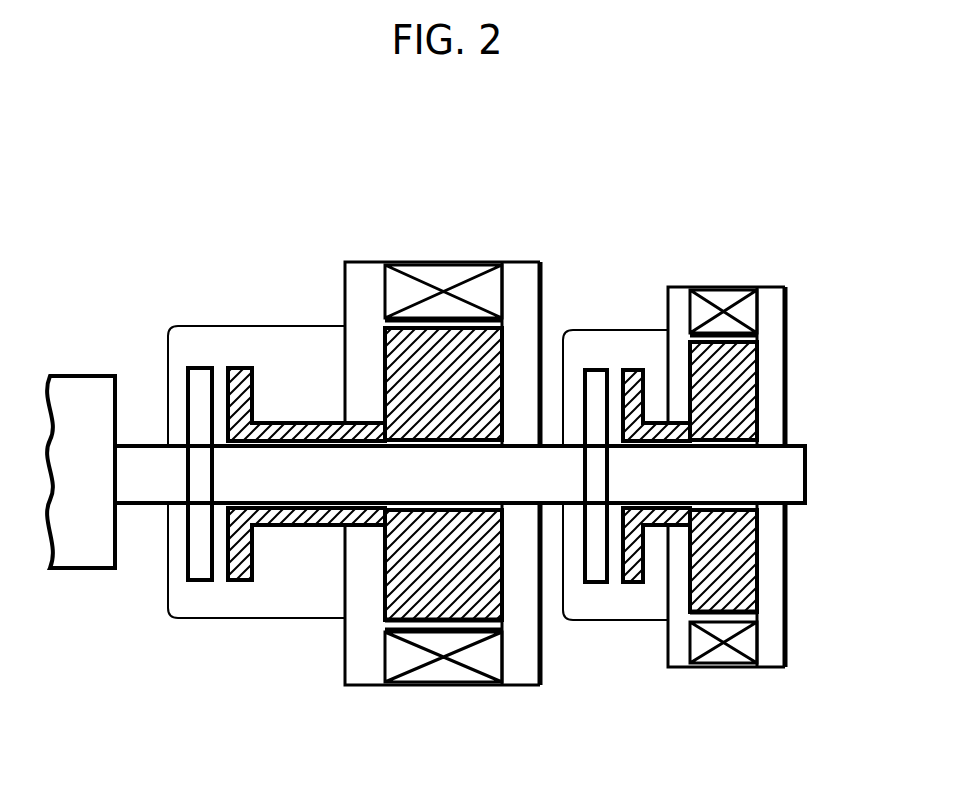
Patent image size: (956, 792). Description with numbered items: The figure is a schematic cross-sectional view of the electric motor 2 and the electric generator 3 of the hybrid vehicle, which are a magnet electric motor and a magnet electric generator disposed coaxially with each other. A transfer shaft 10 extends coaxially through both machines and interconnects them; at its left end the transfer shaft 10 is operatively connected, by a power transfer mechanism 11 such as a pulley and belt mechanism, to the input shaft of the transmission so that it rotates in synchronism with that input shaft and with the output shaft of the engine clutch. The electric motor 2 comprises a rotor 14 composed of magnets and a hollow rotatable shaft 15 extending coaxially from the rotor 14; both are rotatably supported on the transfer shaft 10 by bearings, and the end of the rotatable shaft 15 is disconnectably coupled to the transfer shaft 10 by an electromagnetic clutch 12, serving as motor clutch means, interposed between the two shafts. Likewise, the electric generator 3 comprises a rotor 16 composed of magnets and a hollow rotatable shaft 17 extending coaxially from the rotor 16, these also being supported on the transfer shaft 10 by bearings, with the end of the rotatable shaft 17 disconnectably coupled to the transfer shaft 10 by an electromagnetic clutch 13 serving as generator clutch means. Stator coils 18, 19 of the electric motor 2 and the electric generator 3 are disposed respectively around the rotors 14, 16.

The electric motor 2 is at (376, 430).
The electric generator 3 is at (715, 421).
The transfer shaft 10 is at (152, 482).
The power transfer mechanism 11 is at (82, 370).
The electromagnetic clutch 12 is at (218, 587).
The electromagnetic clutch 13 is at (613, 587).
The rotor 14 is at (478, 353).
The rotatable shaft 15 is at (298, 420).
The rotor 16 is at (740, 385).
The rotatable shaft 17 is at (660, 423).
The stator coil 18 is at (433, 277).
The stator coil 19 is at (728, 297).